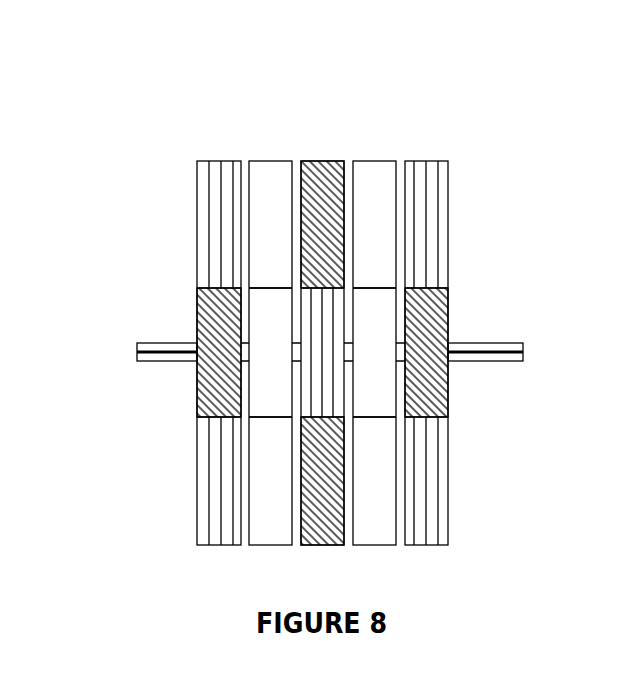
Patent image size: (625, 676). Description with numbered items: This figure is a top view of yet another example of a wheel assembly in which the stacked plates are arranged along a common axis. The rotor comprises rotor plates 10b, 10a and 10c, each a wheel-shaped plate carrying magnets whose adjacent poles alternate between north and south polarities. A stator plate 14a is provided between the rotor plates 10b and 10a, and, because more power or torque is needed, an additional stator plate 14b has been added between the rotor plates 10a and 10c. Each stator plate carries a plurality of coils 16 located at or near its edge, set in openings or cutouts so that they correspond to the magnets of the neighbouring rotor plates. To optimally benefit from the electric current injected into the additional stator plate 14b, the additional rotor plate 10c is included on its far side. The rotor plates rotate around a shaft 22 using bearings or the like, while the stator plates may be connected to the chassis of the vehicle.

The rotor plate 10a is at (332, 148).
The rotor plate 10b is at (217, 150).
The additional rotor plate 10c is at (448, 150).
The stator plate 14a is at (271, 150).
The additional stator plate 14b is at (388, 150).
The coil 16 is at (322, 352).
The shaft 22 is at (155, 343).